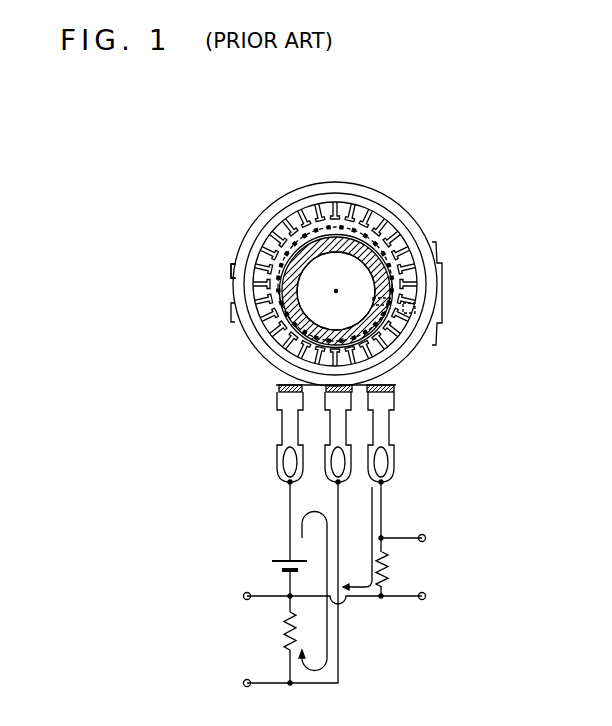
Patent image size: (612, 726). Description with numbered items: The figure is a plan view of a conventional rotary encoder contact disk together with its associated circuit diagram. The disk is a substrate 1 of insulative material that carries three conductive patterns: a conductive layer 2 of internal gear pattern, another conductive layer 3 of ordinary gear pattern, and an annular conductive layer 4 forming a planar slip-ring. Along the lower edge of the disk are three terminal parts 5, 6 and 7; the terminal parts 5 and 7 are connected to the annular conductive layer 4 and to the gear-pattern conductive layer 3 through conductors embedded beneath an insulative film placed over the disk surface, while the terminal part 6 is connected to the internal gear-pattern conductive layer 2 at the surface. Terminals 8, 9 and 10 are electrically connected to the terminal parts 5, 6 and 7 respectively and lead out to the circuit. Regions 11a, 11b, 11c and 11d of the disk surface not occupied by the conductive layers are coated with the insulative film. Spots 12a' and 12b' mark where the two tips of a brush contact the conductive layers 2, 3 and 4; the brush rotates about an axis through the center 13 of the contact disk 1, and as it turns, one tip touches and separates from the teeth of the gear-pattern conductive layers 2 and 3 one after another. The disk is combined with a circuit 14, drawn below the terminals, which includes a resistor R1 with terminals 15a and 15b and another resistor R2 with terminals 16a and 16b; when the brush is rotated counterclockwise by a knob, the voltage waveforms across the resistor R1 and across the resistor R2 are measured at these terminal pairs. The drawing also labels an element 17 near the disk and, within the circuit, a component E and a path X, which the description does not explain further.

The substrate 1 is at (232, 318).
The internal gear-pattern conductive layer 2 is at (318, 195).
The gear-pattern conductive layer 3 is at (268, 217).
The annular conductive layer 4 is at (256, 262).
The terminal part 5 is at (278, 393).
The terminal part 6 is at (349, 402).
The terminal part 7 is at (395, 387).
The terminal 8 is at (282, 429).
The terminal 9 is at (383, 452).
The terminal 10 is at (388, 425).
The region 11a is at (232, 268).
The region 11b is at (252, 305).
The region 11c is at (270, 340).
The region 11d is at (330, 313).
The spot 12a' is at (440, 282).
The spot 12b' is at (455, 300).
The center 13 is at (335, 292).
The circuit 14 is at (378, 640).
The terminal 15a is at (244, 596).
The terminal 15b is at (244, 683).
The terminal 16a is at (426, 538).
The terminal 16b is at (426, 596).
The stator 17 is at (356, 192).
The power source E is at (272, 561).
The resistor R1 is at (284, 634).
The resistor R2 is at (388, 566).
The current path X is at (313, 590).